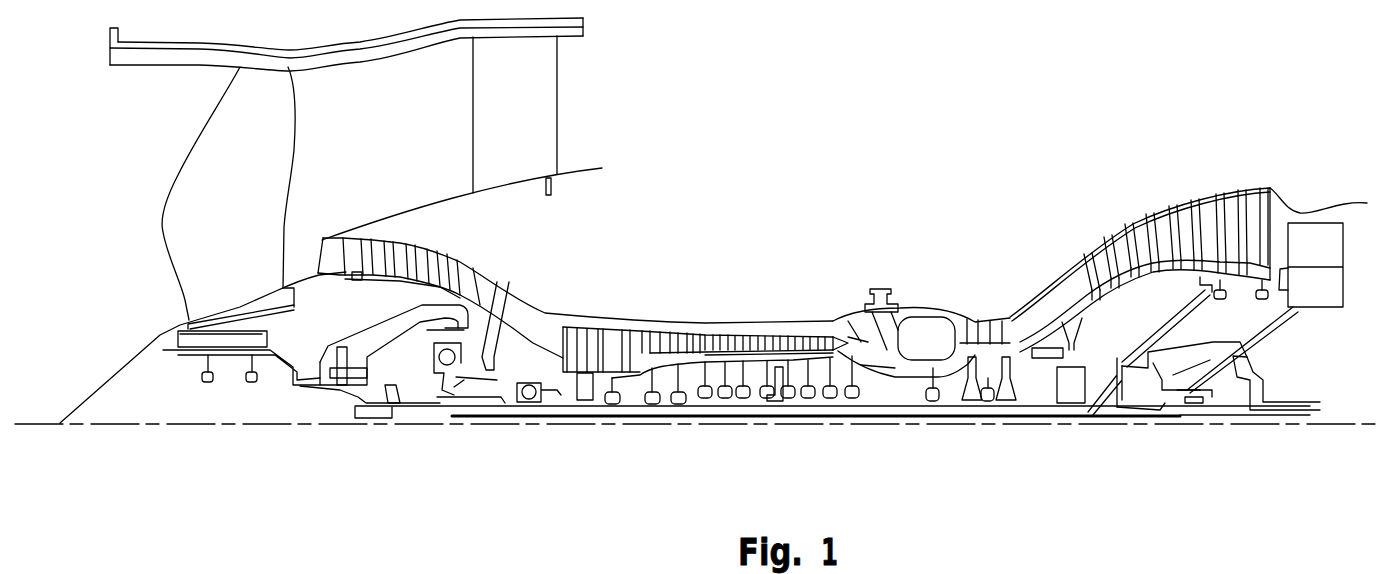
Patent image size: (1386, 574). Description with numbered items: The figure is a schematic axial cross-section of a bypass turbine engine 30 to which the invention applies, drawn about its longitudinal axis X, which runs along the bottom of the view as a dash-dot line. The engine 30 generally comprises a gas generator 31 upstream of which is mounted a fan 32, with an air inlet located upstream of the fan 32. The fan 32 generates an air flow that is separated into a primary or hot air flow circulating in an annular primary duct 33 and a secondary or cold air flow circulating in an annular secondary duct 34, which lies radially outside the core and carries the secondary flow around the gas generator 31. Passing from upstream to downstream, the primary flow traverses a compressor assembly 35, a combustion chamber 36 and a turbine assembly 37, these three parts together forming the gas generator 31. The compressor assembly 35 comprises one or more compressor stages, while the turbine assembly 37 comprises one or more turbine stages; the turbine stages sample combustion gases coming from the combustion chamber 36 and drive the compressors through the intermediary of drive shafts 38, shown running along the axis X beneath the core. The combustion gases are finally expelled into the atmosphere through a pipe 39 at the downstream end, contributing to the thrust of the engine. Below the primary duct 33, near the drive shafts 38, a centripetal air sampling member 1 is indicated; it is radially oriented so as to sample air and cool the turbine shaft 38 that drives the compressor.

The centripetal air sampling member 1 is at (790, 404).
The bypass turbine engine 30 is at (834, 170).
The gas generator 31 is at (703, 300).
The fan 32 is at (203, 200).
The annular primary duct 33 is at (530, 332).
The annular secondary duct 34 is at (356, 129).
The compressor assembly 35 is at (1027, 280).
The combustion chamber 36 is at (921, 283).
The turbine assembly 37 is at (1197, 183).
The drive shafts 38 is at (835, 418).
The pipe 39 is at (1317, 178).
The longitudinal axis X is at (1362, 424).